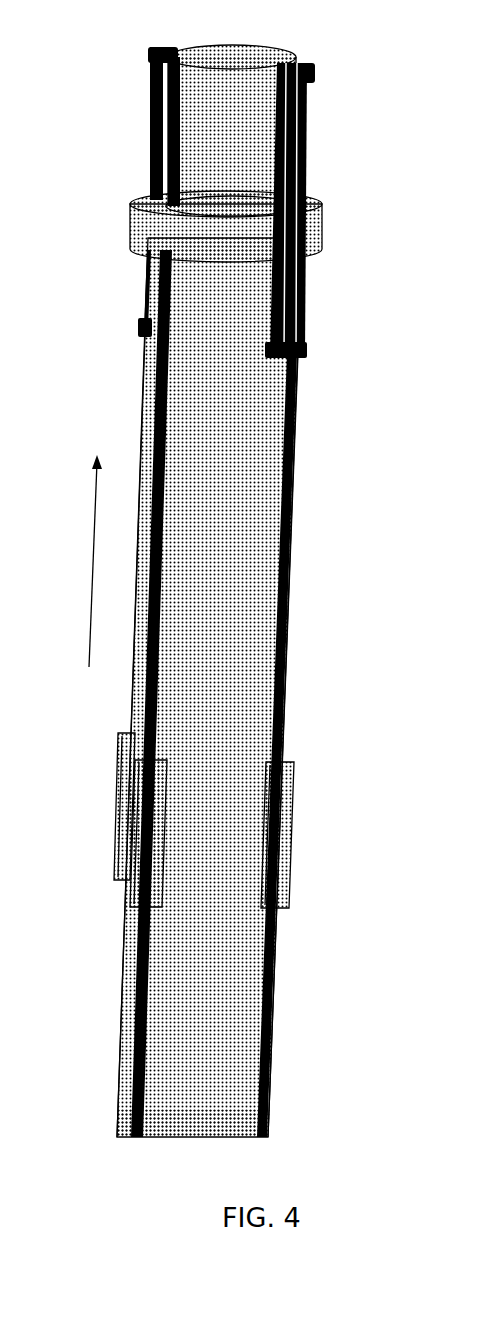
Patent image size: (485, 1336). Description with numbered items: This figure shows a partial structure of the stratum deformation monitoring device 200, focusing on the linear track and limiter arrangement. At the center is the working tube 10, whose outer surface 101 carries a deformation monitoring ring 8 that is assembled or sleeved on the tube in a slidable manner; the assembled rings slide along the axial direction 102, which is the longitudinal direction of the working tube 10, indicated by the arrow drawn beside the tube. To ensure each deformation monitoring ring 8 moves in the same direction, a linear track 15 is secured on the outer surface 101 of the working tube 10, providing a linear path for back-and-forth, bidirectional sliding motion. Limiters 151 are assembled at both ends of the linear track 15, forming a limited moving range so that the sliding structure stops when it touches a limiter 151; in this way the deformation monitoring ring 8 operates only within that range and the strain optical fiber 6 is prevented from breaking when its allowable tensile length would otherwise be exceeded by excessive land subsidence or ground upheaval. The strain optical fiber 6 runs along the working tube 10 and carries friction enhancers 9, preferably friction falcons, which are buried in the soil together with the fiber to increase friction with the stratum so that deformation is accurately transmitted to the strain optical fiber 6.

The strain optical fiber 6 is at (293, 488).
The deformation monitoring ring 8 is at (315, 240).
The friction enhancer 9 is at (280, 840).
The working tube 10 is at (250, 620).
The outer surface 101 is at (247, 697).
The axial direction 102 is at (86, 573).
The linear track 15 is at (307, 132).
The limiter 151 is at (314, 72).
The stratum deformation monitoring device 200 is at (383, 1068).